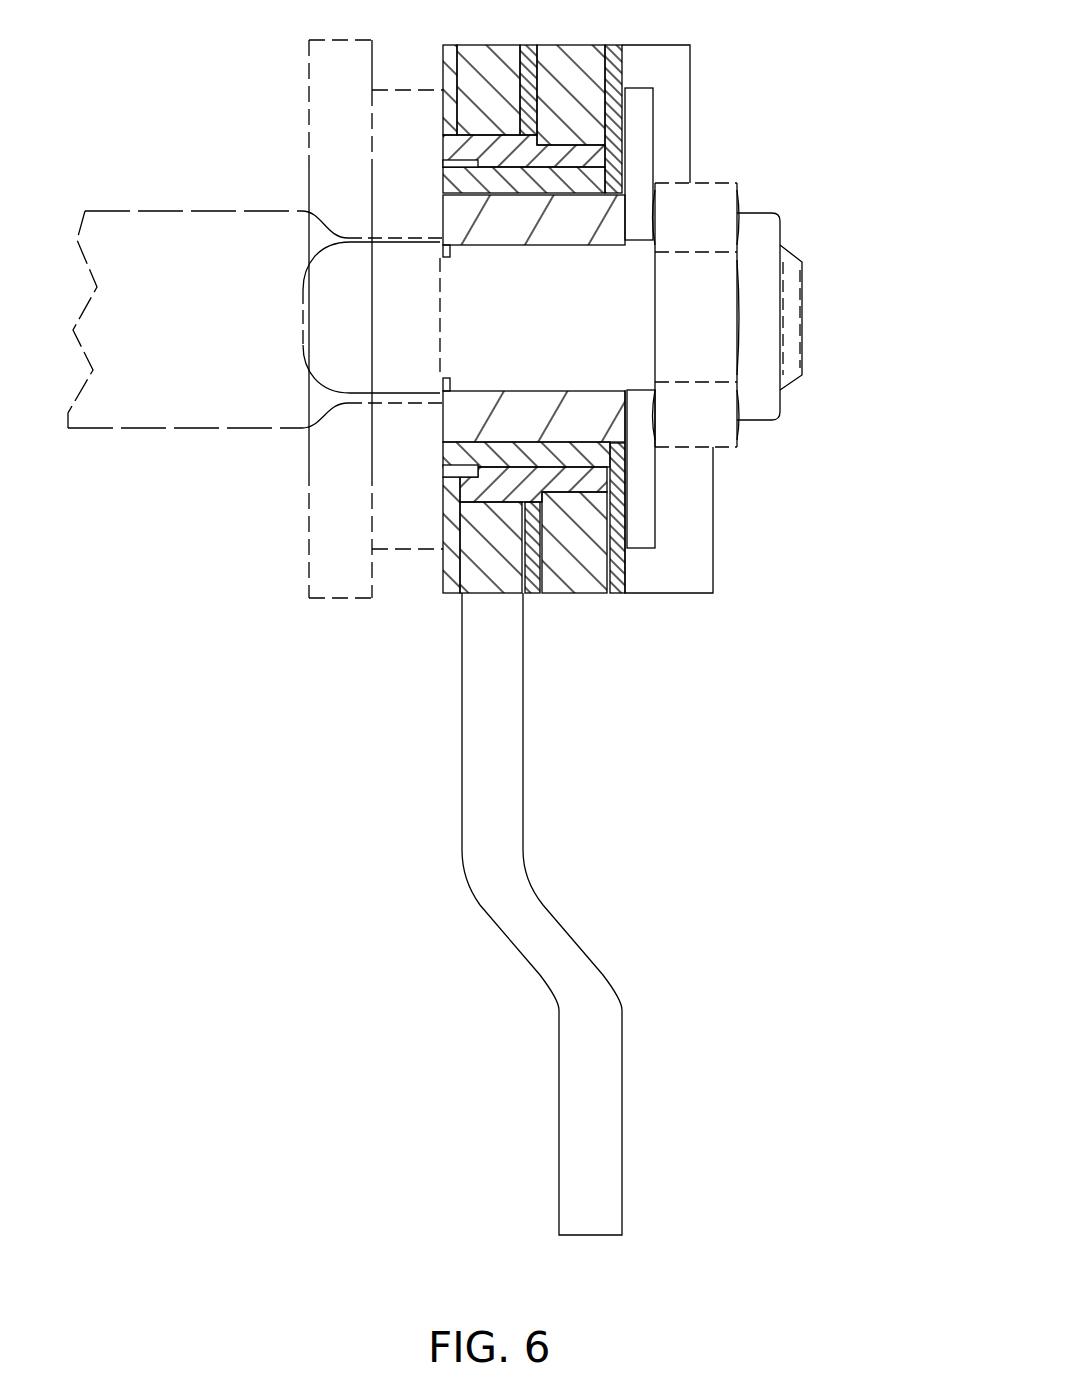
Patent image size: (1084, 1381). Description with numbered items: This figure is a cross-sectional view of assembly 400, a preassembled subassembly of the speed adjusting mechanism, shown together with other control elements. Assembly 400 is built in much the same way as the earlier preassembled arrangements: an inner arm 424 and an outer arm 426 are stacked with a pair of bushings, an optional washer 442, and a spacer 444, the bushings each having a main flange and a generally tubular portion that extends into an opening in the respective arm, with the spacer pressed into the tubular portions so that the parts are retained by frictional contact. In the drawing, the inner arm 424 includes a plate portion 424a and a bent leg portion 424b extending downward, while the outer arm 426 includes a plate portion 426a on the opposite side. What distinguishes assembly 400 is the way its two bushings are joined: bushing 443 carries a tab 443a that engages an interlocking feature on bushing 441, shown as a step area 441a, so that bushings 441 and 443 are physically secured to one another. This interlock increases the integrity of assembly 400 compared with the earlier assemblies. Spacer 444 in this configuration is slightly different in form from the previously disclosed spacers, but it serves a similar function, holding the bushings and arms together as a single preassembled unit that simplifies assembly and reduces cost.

The assembly 400 is at (812, 95).
The inner arm 424 is at (487, 48).
The first bracket plate 424a is at (690, 88).
The first bracket bent leg 424b is at (622, 1130).
The outer arm 426 is at (572, 595).
The second bracket plate 426a is at (713, 490).
The bushing 441 is at (440, 585).
The step area 441a is at (478, 470).
The washer 442 is at (531, 48).
The bushing 443 is at (617, 48).
The tab 443a is at (458, 166).
The spacer 444 is at (602, 413).